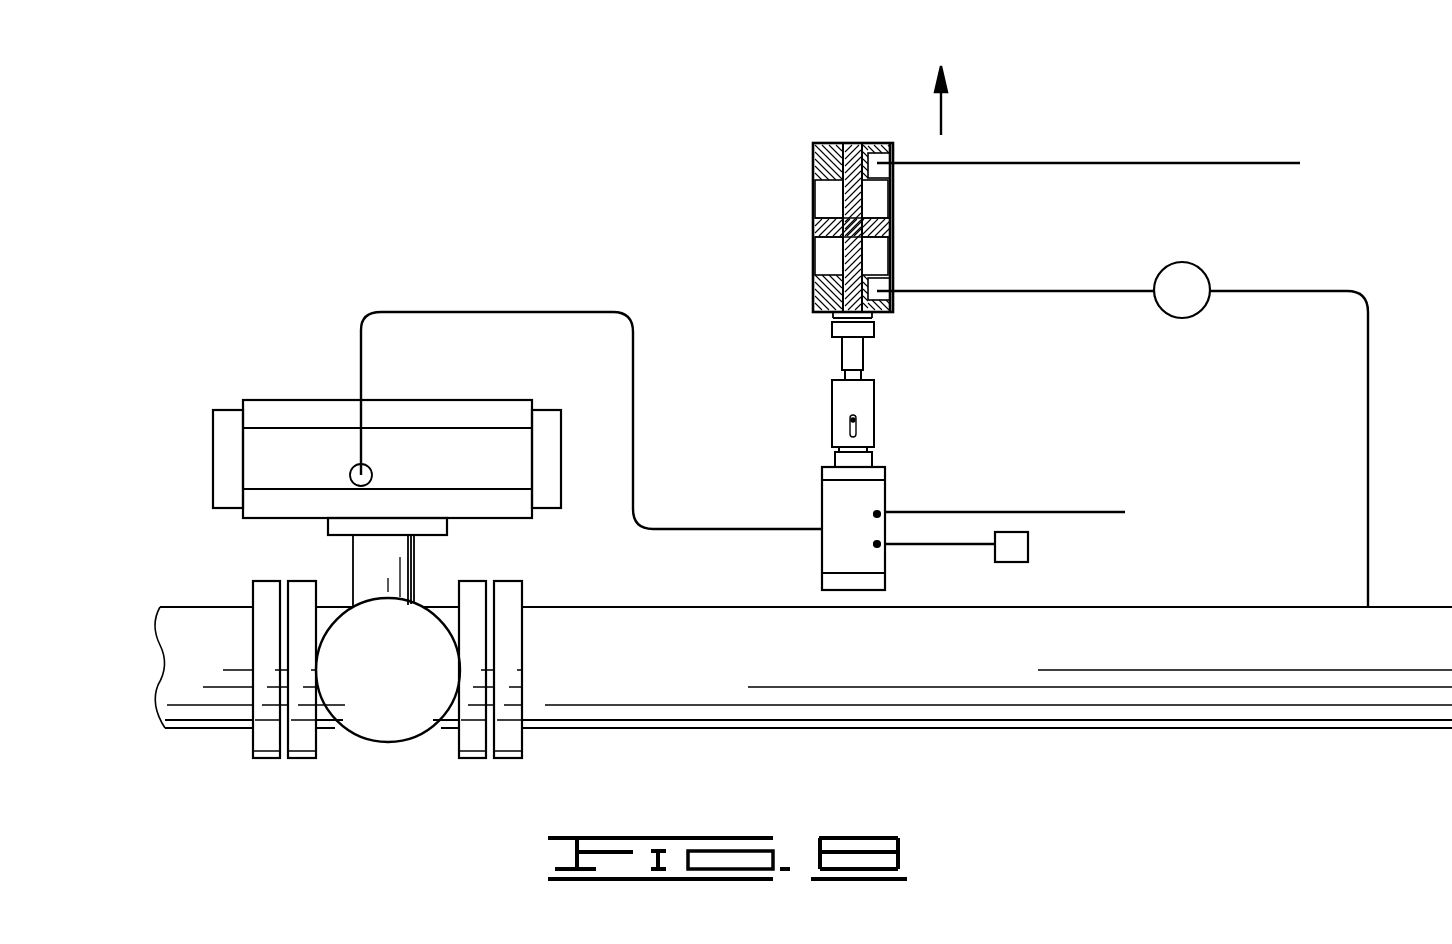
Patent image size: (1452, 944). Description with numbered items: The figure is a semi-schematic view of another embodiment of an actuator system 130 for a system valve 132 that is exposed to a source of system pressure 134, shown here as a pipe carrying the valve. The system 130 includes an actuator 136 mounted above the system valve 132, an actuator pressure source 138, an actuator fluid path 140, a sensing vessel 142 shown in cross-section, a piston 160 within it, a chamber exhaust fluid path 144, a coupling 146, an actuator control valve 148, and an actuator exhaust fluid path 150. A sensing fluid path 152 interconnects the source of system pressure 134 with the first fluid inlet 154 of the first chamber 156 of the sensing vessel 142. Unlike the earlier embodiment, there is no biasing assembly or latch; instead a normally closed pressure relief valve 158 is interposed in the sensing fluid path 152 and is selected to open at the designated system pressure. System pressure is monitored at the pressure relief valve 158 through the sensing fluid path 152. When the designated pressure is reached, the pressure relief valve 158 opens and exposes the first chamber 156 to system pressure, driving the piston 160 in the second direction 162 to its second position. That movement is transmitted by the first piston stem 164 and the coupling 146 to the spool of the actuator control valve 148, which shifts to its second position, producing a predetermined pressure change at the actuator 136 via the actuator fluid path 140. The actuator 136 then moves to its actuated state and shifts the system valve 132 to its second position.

The actuator system 130 is at (686, 94).
The system valve 132 is at (364, 681).
The source of system pressure 134 is at (570, 625).
The actuator 136 is at (318, 400).
The actuator pressure source 138 is at (1023, 548).
The actuator fluid path 140 is at (570, 312).
The sensing vessel 142 is at (813, 157).
The chamber exhaust fluid path 144 is at (1073, 163).
The coupling 146 is at (887, 410).
The actuator control valve 148 is at (822, 482).
The actuator exhaust fluid path 150 is at (1045, 512).
The sensing fluid path 152 is at (1312, 290).
The first fluid inlet 154 is at (895, 254).
The first chamber 156 is at (826, 254).
The pressure relief valve 158 is at (1185, 262).
The piston 160 is at (895, 218).
The second direction 162 is at (941, 112).
The first piston stem 164 is at (862, 355).